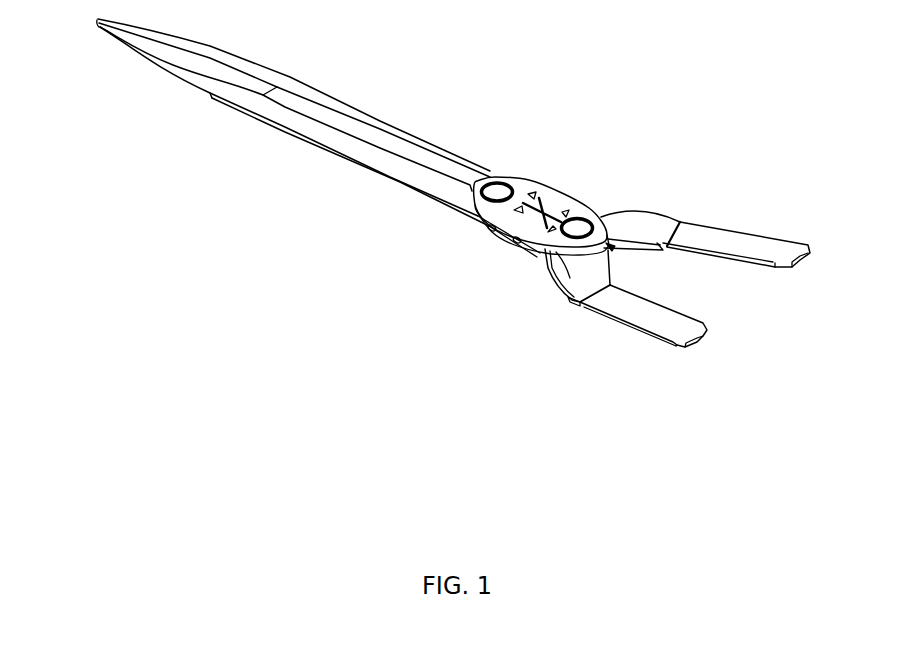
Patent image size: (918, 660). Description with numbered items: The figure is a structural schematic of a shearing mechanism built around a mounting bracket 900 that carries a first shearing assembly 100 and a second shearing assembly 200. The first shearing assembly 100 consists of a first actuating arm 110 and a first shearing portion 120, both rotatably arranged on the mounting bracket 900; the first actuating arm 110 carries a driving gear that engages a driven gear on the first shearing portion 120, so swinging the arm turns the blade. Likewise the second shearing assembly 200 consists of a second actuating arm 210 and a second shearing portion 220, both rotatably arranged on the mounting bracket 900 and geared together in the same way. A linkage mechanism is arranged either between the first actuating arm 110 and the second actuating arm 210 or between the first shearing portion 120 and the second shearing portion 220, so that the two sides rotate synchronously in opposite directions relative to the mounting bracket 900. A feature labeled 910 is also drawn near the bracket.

The first shearing assembly 100 is at (320, 296).
The first actuating arm 110 is at (550, 273).
The first shearing portion 120 is at (448, 192).
The second shearing assembly 200 is at (763, 38).
The second actuating arm 210 is at (620, 222).
The second shearing portion 220 is at (380, 121).
The mounting bracket 900 is at (613, 248).
The pivot shaft 910 is at (563, 236).